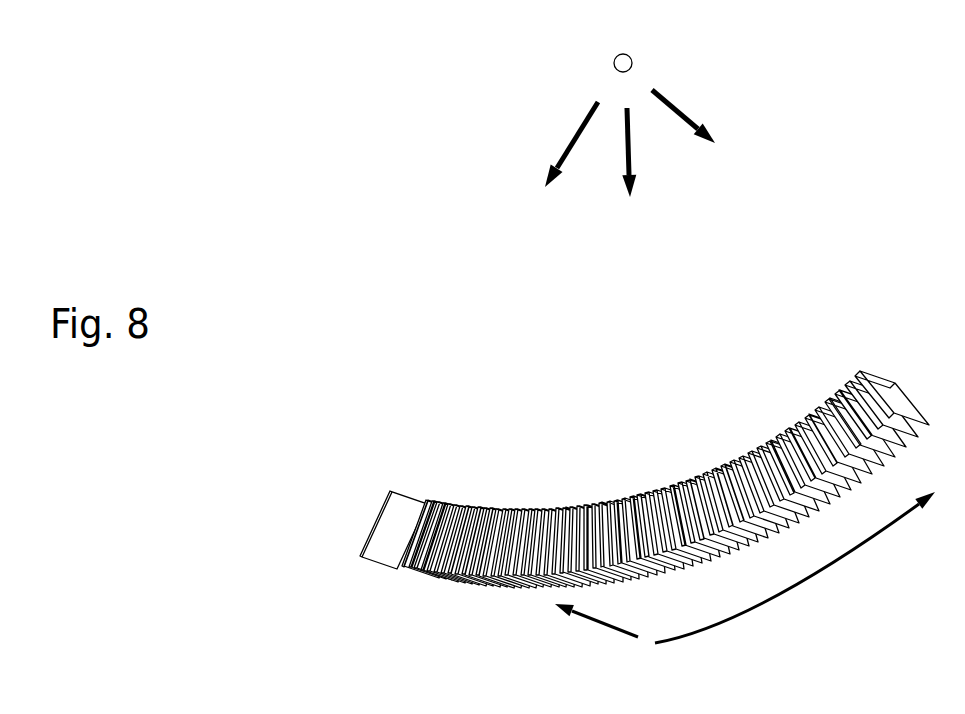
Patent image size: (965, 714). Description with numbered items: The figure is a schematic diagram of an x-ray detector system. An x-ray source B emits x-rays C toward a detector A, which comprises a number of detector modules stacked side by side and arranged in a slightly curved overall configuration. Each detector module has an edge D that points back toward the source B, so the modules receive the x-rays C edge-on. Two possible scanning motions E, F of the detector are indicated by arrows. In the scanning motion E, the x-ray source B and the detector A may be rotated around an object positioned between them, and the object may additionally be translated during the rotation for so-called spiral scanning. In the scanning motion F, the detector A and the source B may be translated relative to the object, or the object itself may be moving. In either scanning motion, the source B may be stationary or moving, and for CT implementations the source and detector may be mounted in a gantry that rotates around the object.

The flexible substrate with array of fins A is at (639, 484).
The x-ray source B is at (614, 58).
The x-rays C is at (630, 161).
The edge D is at (859, 372).
The scanning motion E is at (795, 567).
The scanning motion F is at (596, 628).